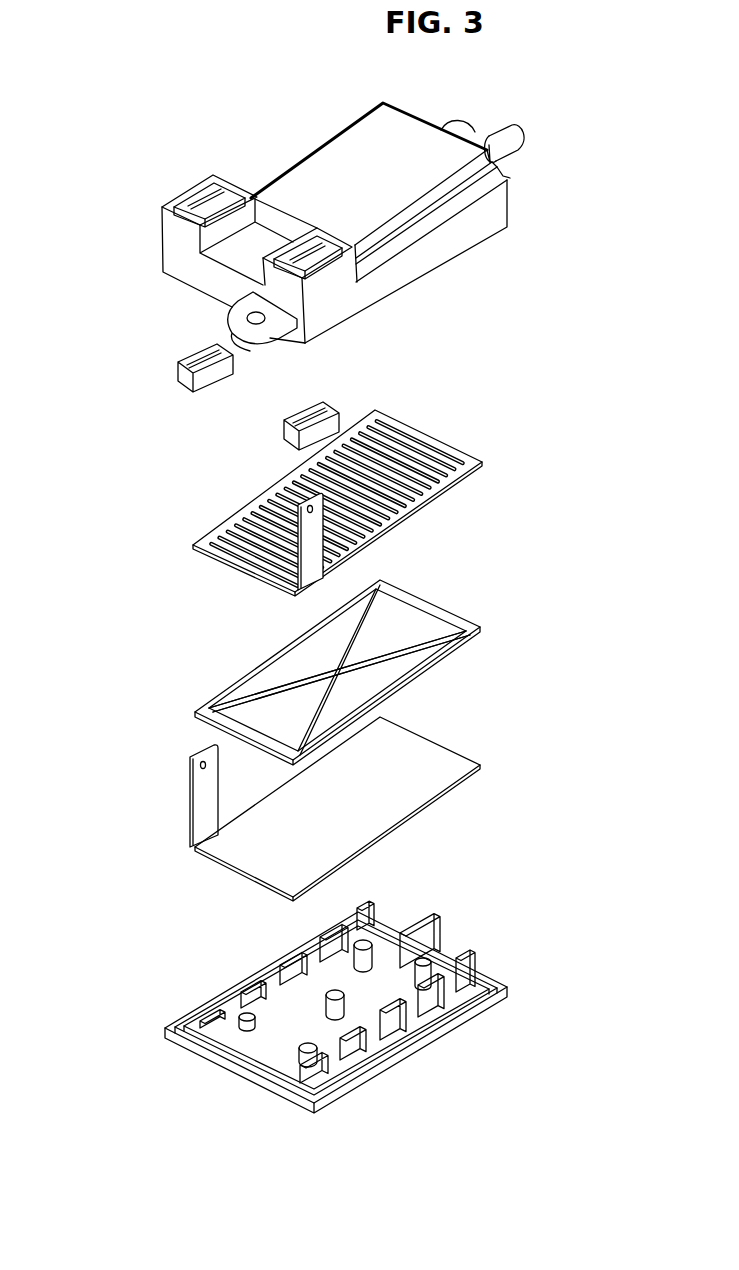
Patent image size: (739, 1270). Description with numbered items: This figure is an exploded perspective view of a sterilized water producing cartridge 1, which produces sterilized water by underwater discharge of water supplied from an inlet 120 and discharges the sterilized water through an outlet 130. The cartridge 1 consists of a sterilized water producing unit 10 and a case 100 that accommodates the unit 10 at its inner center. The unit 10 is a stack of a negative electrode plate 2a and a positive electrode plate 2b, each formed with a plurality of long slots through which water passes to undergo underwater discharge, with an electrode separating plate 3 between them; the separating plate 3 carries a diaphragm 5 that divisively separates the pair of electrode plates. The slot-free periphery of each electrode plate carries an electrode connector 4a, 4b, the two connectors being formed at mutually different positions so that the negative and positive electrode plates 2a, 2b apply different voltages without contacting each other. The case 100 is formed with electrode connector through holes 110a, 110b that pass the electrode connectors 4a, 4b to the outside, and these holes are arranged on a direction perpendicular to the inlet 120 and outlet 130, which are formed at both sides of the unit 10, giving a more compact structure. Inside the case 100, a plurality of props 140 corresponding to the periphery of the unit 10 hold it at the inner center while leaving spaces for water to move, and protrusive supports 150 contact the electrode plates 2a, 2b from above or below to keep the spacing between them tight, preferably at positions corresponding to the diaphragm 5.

The sterilized water producing cartridge 1 is at (98, 88).
The case 100 is at (480, 226).
The electrode connector through hole 110a is at (333, 262).
The electrode connector through hole 110b is at (200, 198).
The inlet 120 is at (508, 163).
The outlet 130 is at (519, 137).
The sterilized water producing unit 10 is at (533, 523).
The negative electrode plate 2a is at (440, 492).
The positive electrode plate 2b is at (445, 745).
The electrode separating plate 3 is at (481, 626).
The electrode connector 4a is at (308, 562).
The electrode connector 4b is at (197, 768).
The diaphragm 5 is at (252, 686).
The prop 140 is at (468, 965).
The support 150 is at (368, 943).